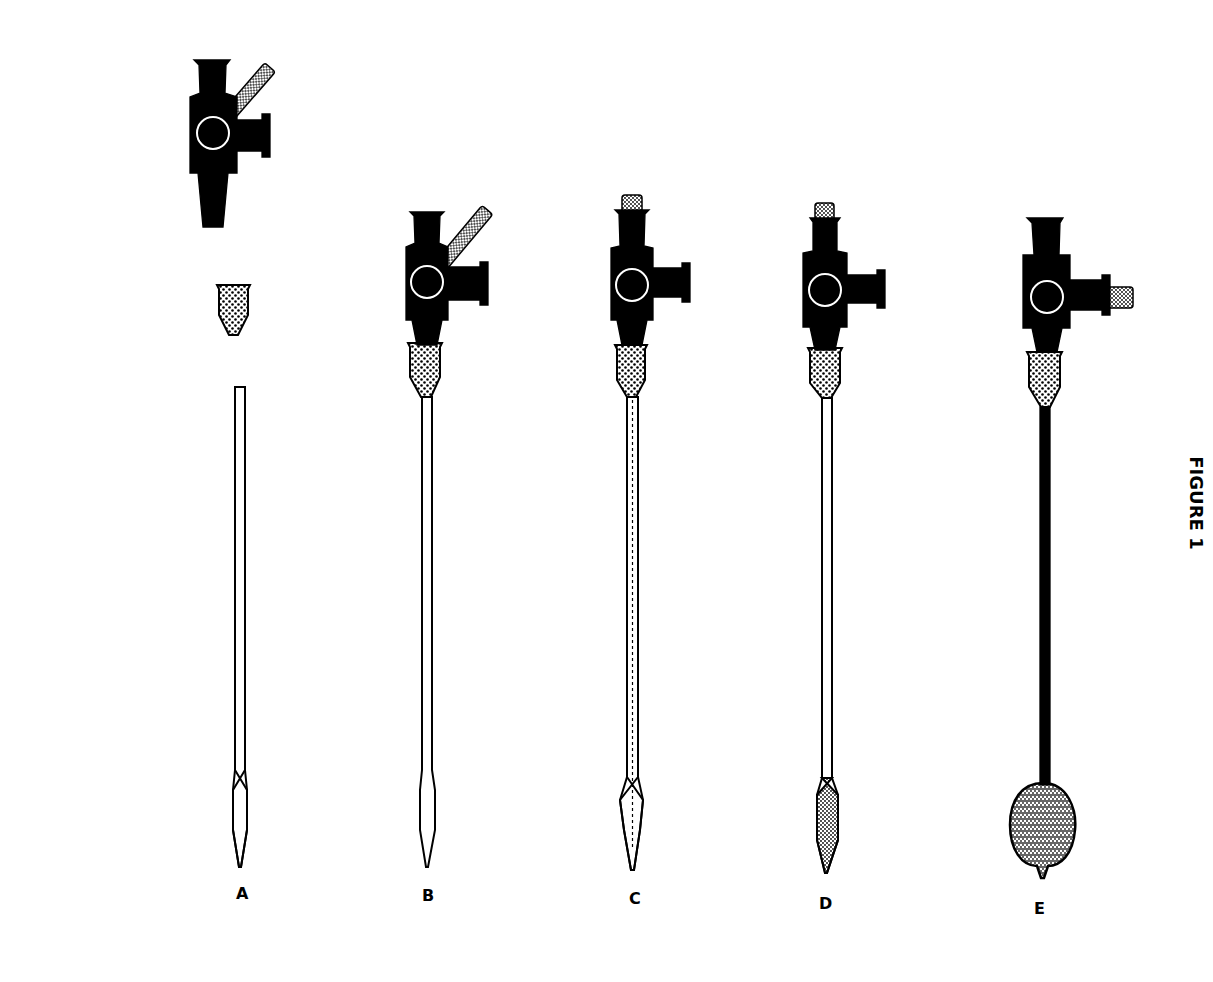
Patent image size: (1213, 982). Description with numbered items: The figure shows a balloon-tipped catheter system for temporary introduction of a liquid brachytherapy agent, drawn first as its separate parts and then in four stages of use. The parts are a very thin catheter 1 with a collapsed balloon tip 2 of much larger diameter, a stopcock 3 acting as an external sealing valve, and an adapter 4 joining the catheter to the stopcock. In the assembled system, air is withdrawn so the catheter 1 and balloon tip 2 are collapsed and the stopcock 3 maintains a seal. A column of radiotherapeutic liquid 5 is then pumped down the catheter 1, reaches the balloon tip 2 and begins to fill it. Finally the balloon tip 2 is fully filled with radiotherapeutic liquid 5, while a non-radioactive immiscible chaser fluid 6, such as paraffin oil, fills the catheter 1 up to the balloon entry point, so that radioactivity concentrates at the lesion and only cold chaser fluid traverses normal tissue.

The catheter 1 is at (245, 547).
The collapsed balloon tip 2 is at (245, 808).
The stopcock 3 is at (253, 185).
The adapter 4 is at (249, 300).
The radiotherapeutic liquid 5 is at (634, 518).
The immiscible chaser fluid 6 is at (1050, 512).